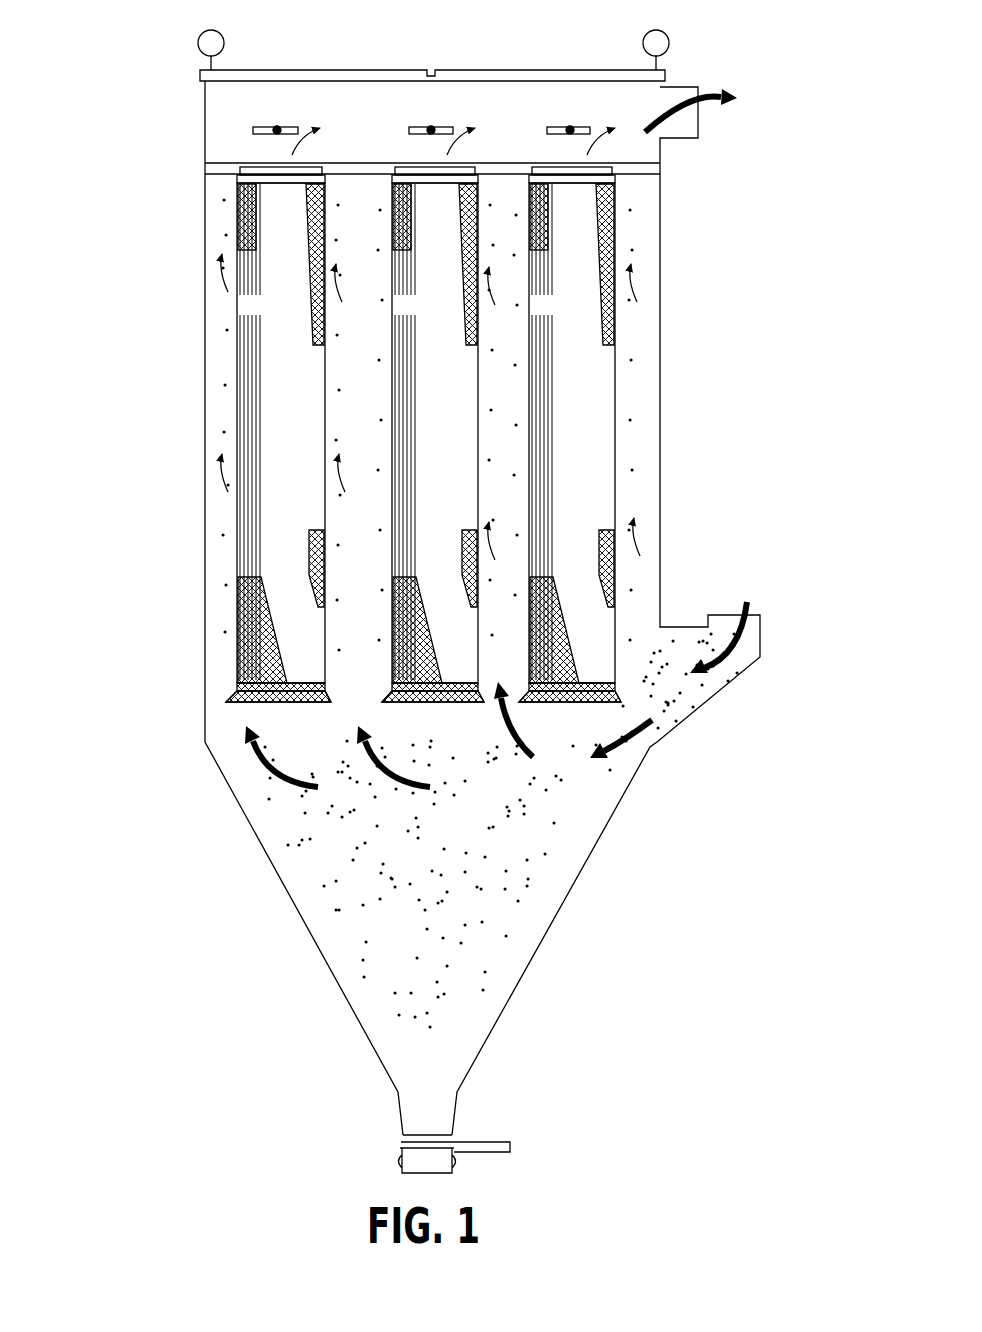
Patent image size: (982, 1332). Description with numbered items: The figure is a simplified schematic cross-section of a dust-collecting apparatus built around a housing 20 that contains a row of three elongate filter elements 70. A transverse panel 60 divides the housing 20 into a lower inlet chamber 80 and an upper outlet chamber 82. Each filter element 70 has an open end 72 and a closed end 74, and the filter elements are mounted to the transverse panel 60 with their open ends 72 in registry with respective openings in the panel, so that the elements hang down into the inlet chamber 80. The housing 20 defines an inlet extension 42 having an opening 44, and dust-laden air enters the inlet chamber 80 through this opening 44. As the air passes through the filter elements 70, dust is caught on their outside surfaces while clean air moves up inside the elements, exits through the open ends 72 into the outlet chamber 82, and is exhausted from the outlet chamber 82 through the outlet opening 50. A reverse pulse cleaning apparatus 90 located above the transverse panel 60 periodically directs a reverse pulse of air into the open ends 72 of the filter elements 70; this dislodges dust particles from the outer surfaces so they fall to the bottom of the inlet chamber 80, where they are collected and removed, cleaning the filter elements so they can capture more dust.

The housing 20 is at (672, 322).
The inlet extension 42 is at (707, 705).
The opening 44 is at (720, 615).
The outlet opening 50 is at (700, 118).
The transverse panel 60 is at (222, 172).
The elongate filter elements 70 is at (410, 480).
The open end 72 is at (413, 166).
The closed end 74 is at (410, 702).
The inlet chamber 80 is at (355, 883).
The outlet chamber 82 is at (222, 107).
The reverse pulse cleaning apparatus 90 is at (558, 127).